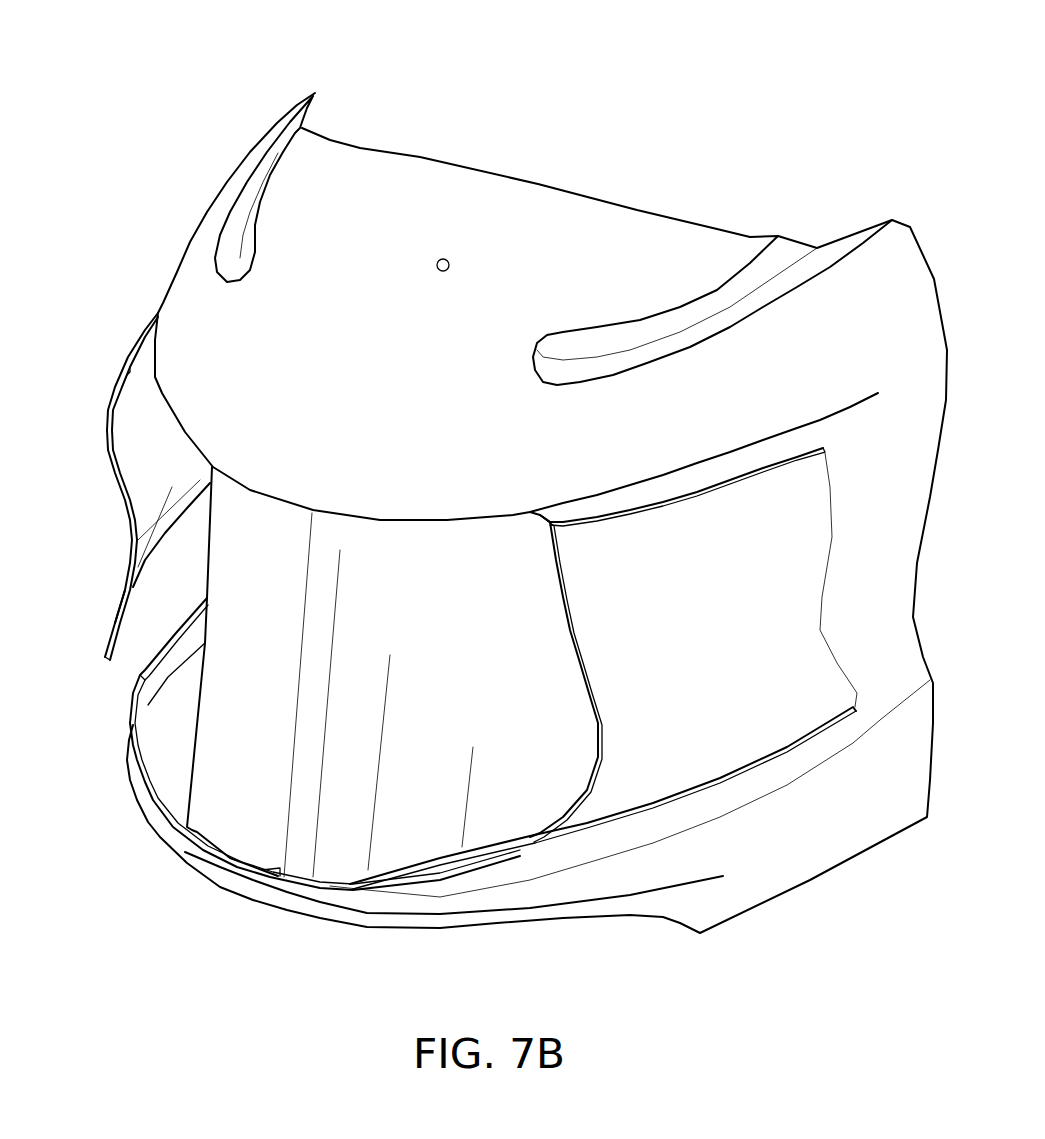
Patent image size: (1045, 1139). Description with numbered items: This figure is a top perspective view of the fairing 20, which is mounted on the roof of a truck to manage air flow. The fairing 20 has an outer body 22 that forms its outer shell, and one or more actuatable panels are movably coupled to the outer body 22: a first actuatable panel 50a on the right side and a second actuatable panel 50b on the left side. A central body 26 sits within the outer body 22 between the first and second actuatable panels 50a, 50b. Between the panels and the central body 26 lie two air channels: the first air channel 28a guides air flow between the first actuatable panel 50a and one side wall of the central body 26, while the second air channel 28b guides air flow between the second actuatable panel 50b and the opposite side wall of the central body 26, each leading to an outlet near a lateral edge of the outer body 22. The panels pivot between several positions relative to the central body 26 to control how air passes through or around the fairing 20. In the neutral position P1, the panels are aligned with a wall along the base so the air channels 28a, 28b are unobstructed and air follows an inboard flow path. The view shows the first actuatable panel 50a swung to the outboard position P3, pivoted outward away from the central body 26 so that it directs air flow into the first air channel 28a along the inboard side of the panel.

The fairing 20 is at (178, 63).
The outer body 22 is at (213, 233).
The central body 26 is at (273, 685).
The first air channel 28a is at (175, 715).
The second air channel 28b is at (527, 788).
The first actuatable panel 50a is at (125, 527).
The second actuatable panel 50b is at (708, 632).
The neutral position P1 is at (753, 781).
The outboard position P3 is at (118, 596).